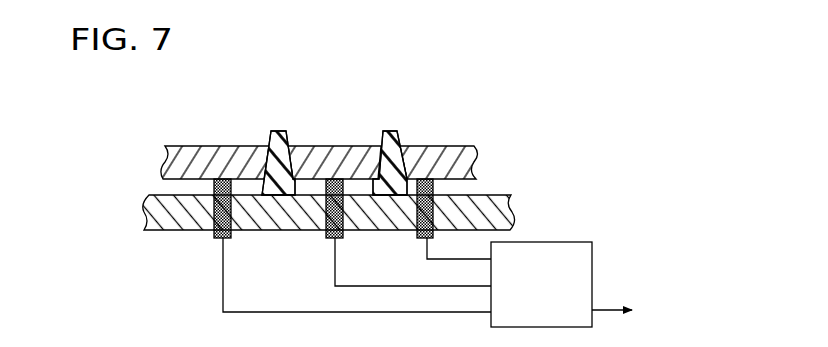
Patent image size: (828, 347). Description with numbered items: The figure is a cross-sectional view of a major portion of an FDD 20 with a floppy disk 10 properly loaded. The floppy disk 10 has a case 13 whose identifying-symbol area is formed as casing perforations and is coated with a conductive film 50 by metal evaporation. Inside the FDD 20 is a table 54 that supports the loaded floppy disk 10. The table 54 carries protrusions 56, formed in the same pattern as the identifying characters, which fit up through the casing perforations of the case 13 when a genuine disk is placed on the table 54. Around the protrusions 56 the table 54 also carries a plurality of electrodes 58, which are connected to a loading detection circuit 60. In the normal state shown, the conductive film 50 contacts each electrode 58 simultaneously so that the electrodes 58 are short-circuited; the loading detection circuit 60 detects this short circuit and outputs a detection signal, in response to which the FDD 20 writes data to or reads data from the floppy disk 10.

The floppy disk 10 is at (426, 145).
The case 13 is at (471, 147).
The FDD 20 is at (176, 311).
The conductive film 50 is at (476, 182).
The table 54 is at (289, 144).
The protrusions 56 is at (279, 130).
The electrodes 58 is at (215, 238).
The loading detection circuit 60 is at (552, 242).